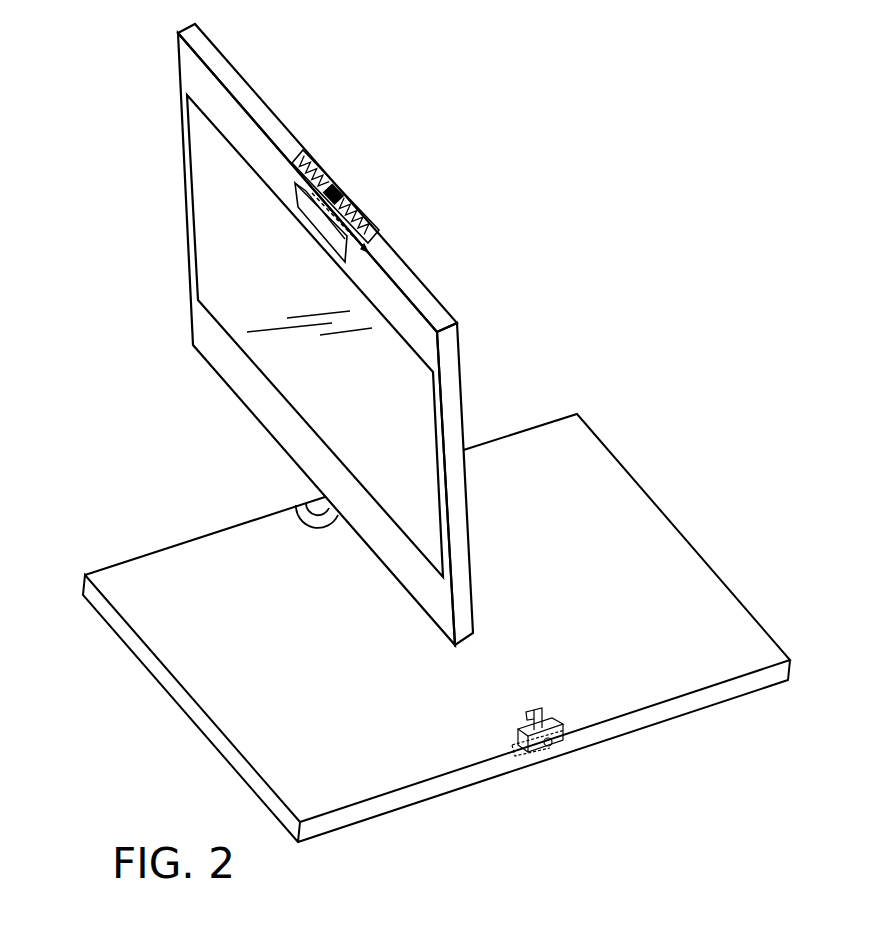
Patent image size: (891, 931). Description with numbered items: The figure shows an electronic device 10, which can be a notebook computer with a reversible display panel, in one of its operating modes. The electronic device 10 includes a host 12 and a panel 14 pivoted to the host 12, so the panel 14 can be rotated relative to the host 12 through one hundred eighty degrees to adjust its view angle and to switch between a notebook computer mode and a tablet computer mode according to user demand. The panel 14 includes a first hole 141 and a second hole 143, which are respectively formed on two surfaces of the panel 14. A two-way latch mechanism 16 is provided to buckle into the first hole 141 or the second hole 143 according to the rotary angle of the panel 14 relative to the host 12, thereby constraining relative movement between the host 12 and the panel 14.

The electronic device 10 is at (683, 116).
The host 12 is at (687, 582).
The panel 14 is at (267, 362).
The first hole 141 is at (295, 200).
The second hole 143 is at (372, 252).
The two-way latch mechanism 16 is at (336, 184).